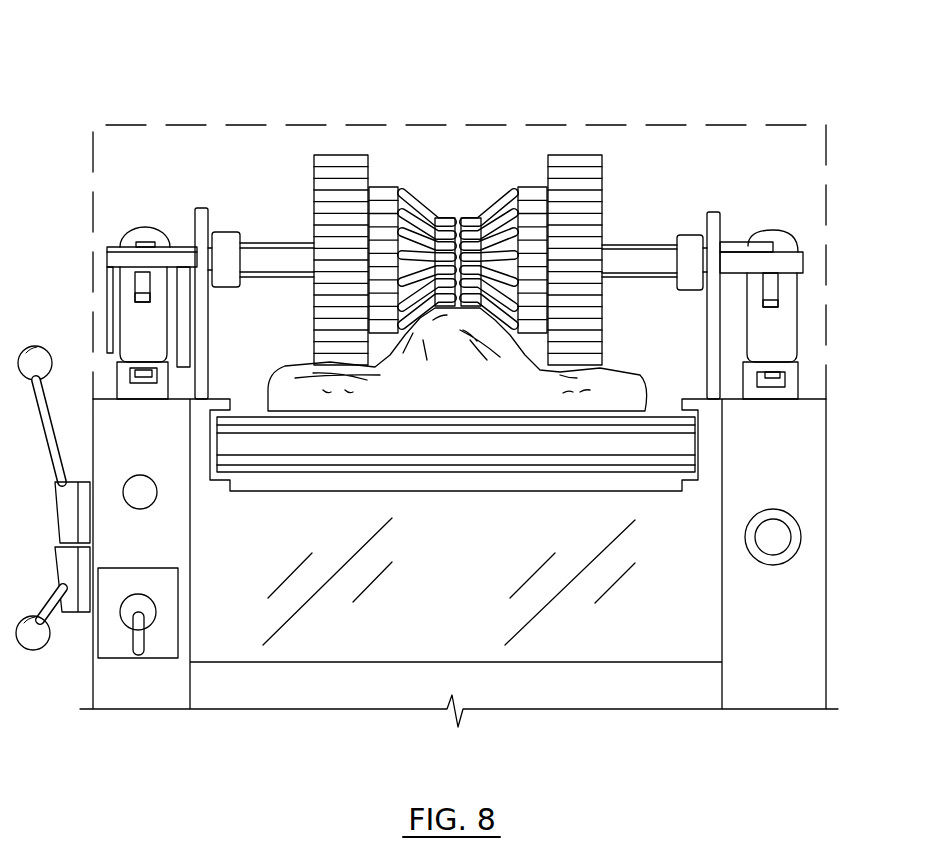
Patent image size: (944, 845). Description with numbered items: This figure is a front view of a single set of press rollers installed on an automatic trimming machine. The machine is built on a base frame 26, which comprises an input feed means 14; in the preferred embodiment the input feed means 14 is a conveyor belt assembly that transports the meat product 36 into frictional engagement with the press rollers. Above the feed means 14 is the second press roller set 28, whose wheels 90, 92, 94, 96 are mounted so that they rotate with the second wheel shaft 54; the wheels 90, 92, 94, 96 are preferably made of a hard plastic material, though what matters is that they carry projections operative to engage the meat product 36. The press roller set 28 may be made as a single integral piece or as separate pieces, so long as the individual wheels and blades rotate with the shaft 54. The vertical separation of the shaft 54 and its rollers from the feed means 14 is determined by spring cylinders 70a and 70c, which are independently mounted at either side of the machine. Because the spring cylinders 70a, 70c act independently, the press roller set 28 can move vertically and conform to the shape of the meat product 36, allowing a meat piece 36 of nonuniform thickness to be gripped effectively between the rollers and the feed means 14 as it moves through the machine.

The input feed means 14 is at (668, 448).
The base frame 26 is at (838, 540).
The second press roller set 28 is at (457, 173).
The meat product 36 is at (425, 378).
The second wheel shaft 54 is at (175, 255).
The spring cylinder 70a is at (143, 343).
The spring cylinder 70c is at (780, 327).
The wheel 90 is at (578, 153).
The wheel 92 is at (528, 183).
The wheel 94 is at (389, 183).
The wheel 96 is at (338, 153).